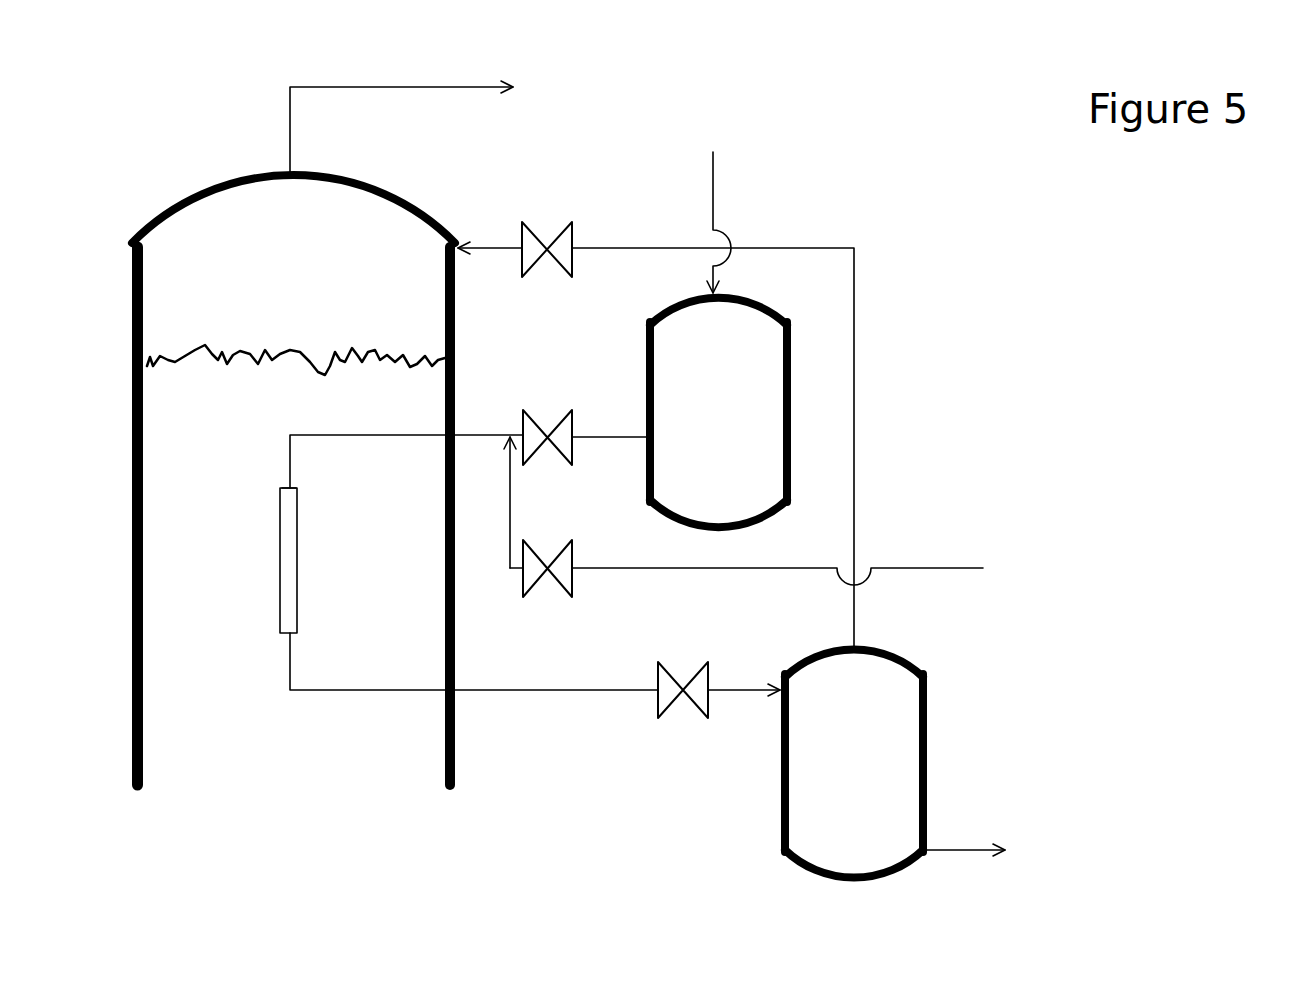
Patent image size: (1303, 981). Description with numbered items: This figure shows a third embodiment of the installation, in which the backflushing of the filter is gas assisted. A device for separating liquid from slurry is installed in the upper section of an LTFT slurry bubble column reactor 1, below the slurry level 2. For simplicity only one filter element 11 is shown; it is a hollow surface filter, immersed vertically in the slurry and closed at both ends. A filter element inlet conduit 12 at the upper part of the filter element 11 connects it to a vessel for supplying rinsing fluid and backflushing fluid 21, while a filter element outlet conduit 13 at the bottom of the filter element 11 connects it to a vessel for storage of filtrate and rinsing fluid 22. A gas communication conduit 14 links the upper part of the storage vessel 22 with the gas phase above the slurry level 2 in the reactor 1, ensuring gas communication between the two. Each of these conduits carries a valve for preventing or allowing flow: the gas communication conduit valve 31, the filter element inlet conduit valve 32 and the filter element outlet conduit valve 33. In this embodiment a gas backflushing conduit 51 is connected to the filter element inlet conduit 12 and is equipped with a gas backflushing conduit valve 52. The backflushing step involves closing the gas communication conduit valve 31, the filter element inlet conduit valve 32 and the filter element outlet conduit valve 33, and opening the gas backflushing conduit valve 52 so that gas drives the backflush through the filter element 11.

The LTFT slurry bubble column reactor 1 is at (293, 480).
The slurry level 2 is at (296, 340).
The filter element 11 is at (312, 560).
The filter element inlet conduit 12 is at (402, 461).
The filter element outlet conduit 13 is at (474, 661).
The gas communication conduit 14 is at (713, 428).
The vessel for supplying rinsing fluid and backflushing fluid 21 is at (718, 412).
The vessel for storage of filtrate and rinsing fluid 22 is at (854, 763).
The gas communication conduit valve 31 is at (549, 221).
The filter element inlet conduit valve 32 is at (584, 412).
The filter element outlet conduit valve 33 is at (719, 668).
The gas backflushing conduit 51 is at (777, 556).
The gas backflushing conduit valve 52 is at (541, 547).